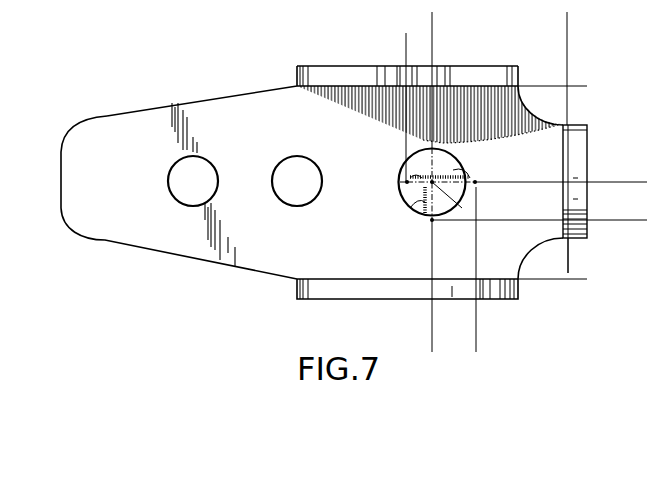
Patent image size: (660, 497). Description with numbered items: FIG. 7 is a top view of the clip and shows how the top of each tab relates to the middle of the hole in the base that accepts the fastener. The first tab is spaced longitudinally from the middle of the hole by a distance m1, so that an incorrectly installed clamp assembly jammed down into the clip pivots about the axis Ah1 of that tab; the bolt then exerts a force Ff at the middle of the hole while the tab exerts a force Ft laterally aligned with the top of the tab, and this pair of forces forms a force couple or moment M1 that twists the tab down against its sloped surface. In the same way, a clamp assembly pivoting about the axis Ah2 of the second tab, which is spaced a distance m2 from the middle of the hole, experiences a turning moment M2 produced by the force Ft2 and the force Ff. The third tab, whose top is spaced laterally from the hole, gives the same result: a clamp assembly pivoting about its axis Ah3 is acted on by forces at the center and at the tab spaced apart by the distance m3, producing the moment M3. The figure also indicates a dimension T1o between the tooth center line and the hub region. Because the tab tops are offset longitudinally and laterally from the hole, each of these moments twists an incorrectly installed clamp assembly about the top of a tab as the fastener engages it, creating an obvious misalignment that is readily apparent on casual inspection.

The distance from tooth center line to hub outer face T1o is at (432, 22).
The longitudinal spacing distance of first tab m1 is at (385, 42).
The longitudinal spacing distance of second tab m2 is at (400, 338).
The lateral spacing distance of third tab m3 is at (627, 142).
The pivot axis of first tab Ah1 is at (573, 86).
The pivot axis of second tab Ah2 is at (573, 280).
The pivot axis of third tab Ah3 is at (568, 262).
The force couple or moment about first tab M1 is at (403, 169).
The turning moment about second tab M2 is at (460, 170).
The force couple or moment about third tab M3 is at (428, 216).
The tab force Ft is at (443, 235).
The fastener force Ff is at (452, 200).
The second tab force Ft2 is at (476, 184).